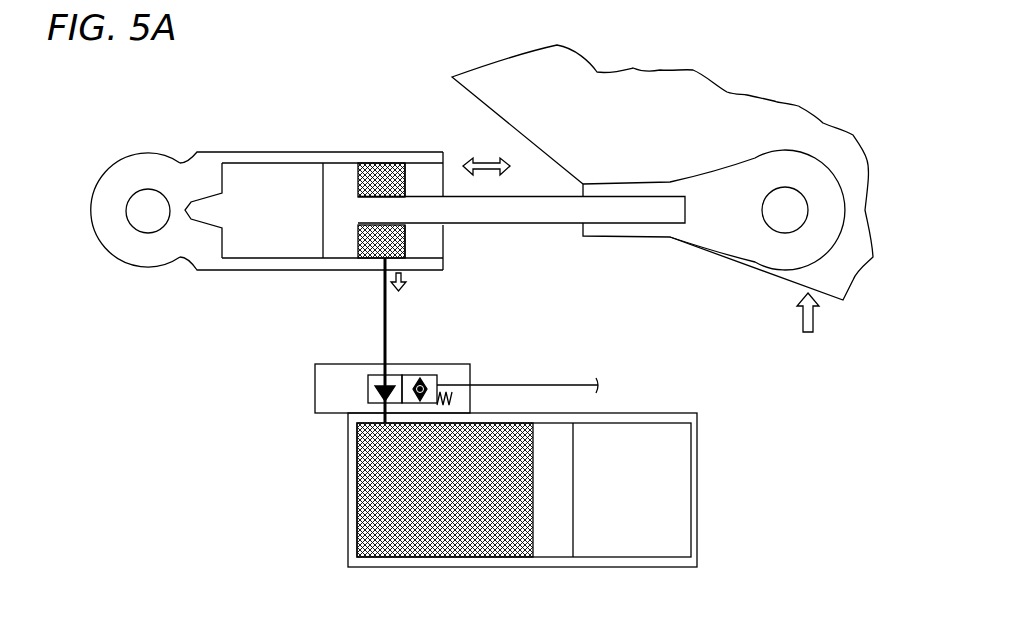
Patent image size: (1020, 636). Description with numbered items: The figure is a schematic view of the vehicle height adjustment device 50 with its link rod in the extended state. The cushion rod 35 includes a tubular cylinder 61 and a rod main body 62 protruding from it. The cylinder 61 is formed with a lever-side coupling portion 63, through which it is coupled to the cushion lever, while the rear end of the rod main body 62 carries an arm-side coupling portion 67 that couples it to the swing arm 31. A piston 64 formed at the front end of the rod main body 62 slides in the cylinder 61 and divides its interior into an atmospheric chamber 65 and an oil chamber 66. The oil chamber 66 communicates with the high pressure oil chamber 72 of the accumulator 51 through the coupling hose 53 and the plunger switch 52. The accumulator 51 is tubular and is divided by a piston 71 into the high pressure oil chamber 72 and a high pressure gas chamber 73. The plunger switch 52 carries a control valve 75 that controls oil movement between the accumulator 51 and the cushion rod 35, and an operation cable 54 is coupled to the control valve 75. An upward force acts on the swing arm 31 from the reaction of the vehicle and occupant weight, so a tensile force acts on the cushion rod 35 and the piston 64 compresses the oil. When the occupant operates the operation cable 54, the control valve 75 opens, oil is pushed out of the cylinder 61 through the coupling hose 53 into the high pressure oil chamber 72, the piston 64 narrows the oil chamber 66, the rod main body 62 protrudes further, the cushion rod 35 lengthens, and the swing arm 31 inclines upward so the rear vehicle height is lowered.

The vehicle height adjustment device 50 is at (172, 118).
The cylinder 61 is at (270, 152).
The lever-side coupling portion 63 is at (142, 270).
The atmospheric chamber 65 is at (236, 175).
The piston 64 is at (335, 256).
The oil chamber 66 is at (366, 163).
The cushion rod 35 is at (388, 135).
The rod main body 62 is at (525, 224).
The swing arm 31 is at (723, 267).
The arm-side coupling portion 67 is at (767, 255).
The coupling hose 53 is at (387, 330).
The plunger switch 52 is at (315, 384).
The control valve 75 is at (373, 373).
The operation cable 54 is at (563, 383).
The accumulator 51 is at (700, 450).
The piston 71 is at (548, 545).
The high pressure oil chamber 72 is at (459, 501).
The high pressure gas chamber 73 is at (640, 501).